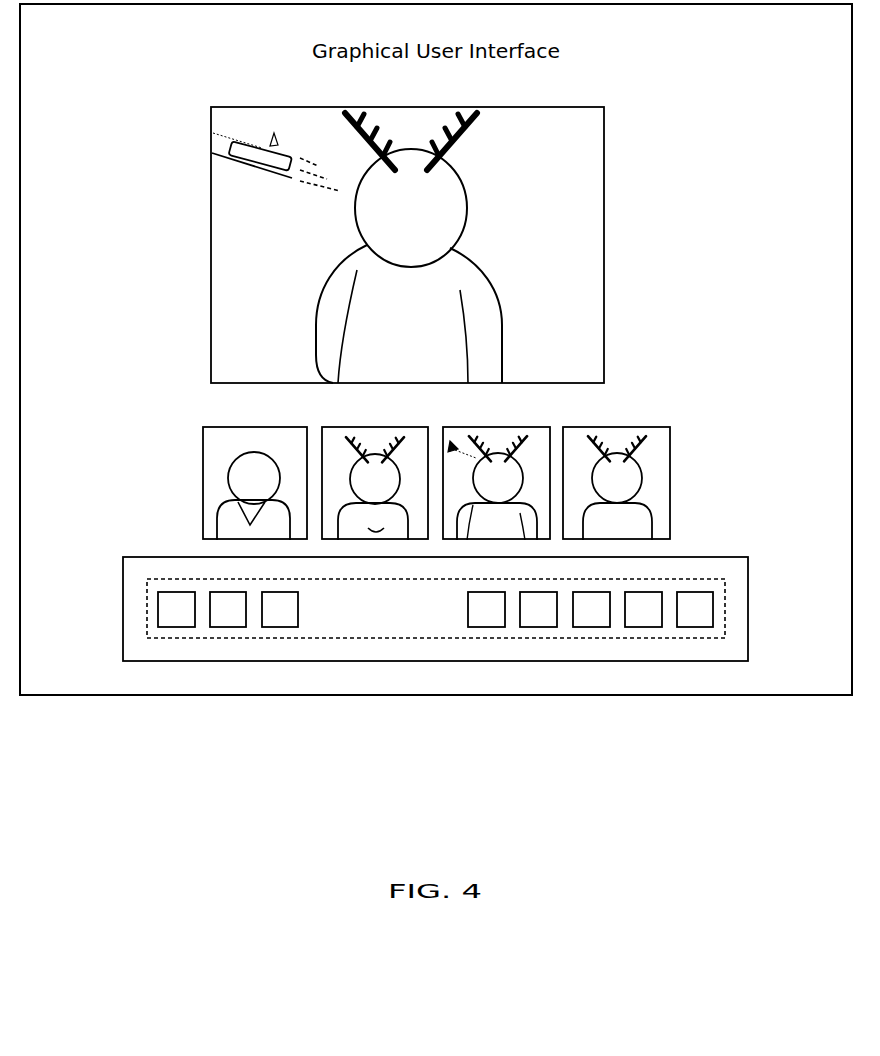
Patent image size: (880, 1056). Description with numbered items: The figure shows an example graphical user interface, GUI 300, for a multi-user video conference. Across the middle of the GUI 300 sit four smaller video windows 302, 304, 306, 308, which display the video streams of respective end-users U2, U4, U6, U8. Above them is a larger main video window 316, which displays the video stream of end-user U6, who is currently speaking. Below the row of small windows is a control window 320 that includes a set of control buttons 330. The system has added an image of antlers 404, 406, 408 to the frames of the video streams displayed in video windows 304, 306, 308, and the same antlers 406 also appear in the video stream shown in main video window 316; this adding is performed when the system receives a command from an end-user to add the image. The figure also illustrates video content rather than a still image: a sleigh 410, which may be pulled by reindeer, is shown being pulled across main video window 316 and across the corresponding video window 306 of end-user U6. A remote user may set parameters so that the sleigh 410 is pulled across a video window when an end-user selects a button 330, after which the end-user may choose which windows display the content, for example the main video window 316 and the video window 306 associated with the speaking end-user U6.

The GUI 300 is at (453, 763).
The main video window 316 is at (270, 106).
The video window 302 is at (212, 424).
The video window 304 is at (332, 424).
The video window 306 is at (452, 424).
The video window 308 is at (572, 424).
The control window 320 is at (133, 555).
The control buttons 330 is at (147, 640).
The antlers 404 is at (366, 445).
The antlers 406 is at (463, 107).
The antlers 408 is at (612, 445).
The sleigh 410 is at (218, 162).
The end-user U2 is at (283, 447).
The end-user U4 is at (405, 445).
The end-user U6 is at (465, 183).
The end-user U8 is at (645, 450).